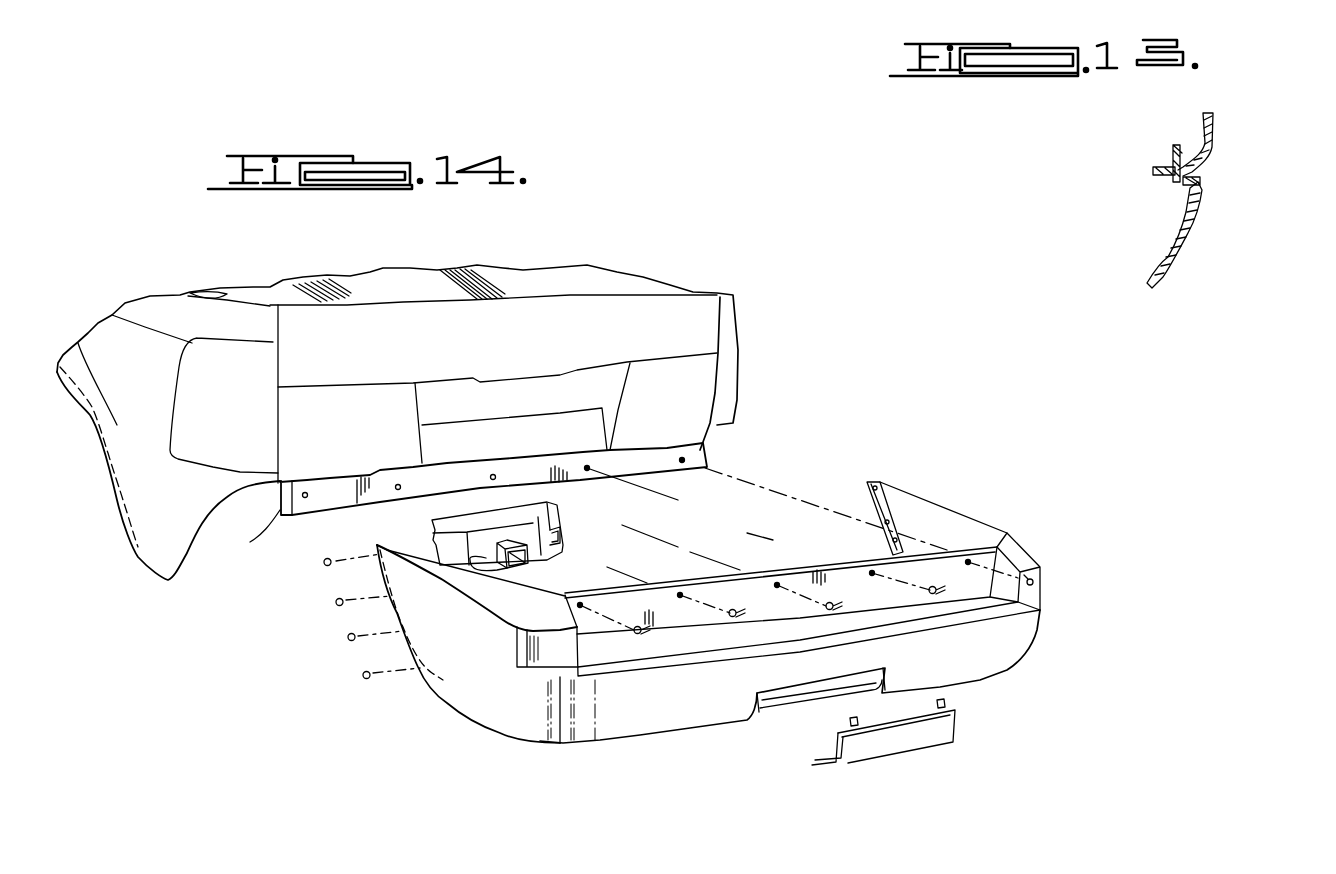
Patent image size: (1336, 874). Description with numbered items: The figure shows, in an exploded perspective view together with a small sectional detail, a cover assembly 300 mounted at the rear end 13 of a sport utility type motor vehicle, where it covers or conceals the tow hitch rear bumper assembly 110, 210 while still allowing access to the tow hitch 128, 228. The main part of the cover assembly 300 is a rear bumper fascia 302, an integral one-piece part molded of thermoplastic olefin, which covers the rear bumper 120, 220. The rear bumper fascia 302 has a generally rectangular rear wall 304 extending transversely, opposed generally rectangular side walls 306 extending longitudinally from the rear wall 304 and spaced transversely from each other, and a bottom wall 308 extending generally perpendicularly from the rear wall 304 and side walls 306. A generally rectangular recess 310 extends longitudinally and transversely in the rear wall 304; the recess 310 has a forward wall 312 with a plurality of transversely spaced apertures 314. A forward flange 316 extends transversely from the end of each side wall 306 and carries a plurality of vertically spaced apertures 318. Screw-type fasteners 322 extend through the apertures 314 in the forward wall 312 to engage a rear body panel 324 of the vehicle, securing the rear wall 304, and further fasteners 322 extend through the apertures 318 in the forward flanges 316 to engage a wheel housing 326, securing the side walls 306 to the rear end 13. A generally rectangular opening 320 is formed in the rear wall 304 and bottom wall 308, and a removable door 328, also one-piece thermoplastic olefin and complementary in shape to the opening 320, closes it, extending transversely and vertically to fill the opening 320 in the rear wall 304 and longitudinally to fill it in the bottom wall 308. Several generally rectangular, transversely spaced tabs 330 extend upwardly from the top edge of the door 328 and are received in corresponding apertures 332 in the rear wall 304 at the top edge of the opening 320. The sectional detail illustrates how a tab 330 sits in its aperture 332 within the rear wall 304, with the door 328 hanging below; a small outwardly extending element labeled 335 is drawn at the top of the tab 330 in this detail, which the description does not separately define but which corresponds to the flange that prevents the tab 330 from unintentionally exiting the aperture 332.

In FIG. 14, the rear end 13 is at (453, 653).
In FIG. 14, the tow hitch rear bumper assembly 110 is at (440, 495).
In FIG. 14, the tow hitch rear bumper assembly 210 is at (447, 513).
In FIG. 14, the rear bumper 120 is at (529, 497).
In FIG. 14, the rear bumper 220 is at (497, 515).
In FIG. 14, the tow hitch 128 is at (568, 538).
In FIG. 14, the tow hitch 228 is at (520, 529).
In FIG. 14, the cover assembly 300 is at (944, 446).
In FIG. 14, the rear bumper fascia 302 is at (1041, 565).
In FIG. 14, the rear wall 304 is at (1003, 645).
In FIG. 15, the rear wall 304 is at (1213, 131).
In FIG. 14, the side walls 306 is at (495, 680).
In FIG. 14, the bottom wall 308 is at (645, 738).
In FIG. 14, the recess 310 is at (998, 590).
In FIG. 14, the forward wall 312 is at (926, 566).
In FIG. 14, the apertures 314 is at (855, 567).
In FIG. 14, the forward flange 316 is at (887, 507).
In FIG. 14, the apertures 318 is at (880, 481).
In FIG. 14, the opening 320 is at (762, 704).
In FIG. 14, the fasteners 322 is at (740, 622).
In FIG. 14, the rear body panel 324 is at (683, 462).
In FIG. 14, the wheel housing 326 is at (115, 489).
In FIG. 14, the removable door 328 is at (840, 768).
In FIG. 15, the removable door 328 is at (1166, 273).
In FIG. 14, the tabs 330 is at (941, 717).
In FIG. 15, the tabs 330 is at (1180, 180).
In FIG. 15, the apertures 332 is at (1173, 162).
In FIG. 15, the stud 335 is at (1180, 144).